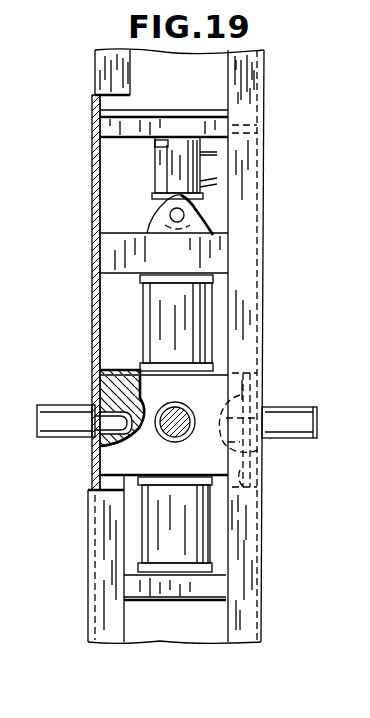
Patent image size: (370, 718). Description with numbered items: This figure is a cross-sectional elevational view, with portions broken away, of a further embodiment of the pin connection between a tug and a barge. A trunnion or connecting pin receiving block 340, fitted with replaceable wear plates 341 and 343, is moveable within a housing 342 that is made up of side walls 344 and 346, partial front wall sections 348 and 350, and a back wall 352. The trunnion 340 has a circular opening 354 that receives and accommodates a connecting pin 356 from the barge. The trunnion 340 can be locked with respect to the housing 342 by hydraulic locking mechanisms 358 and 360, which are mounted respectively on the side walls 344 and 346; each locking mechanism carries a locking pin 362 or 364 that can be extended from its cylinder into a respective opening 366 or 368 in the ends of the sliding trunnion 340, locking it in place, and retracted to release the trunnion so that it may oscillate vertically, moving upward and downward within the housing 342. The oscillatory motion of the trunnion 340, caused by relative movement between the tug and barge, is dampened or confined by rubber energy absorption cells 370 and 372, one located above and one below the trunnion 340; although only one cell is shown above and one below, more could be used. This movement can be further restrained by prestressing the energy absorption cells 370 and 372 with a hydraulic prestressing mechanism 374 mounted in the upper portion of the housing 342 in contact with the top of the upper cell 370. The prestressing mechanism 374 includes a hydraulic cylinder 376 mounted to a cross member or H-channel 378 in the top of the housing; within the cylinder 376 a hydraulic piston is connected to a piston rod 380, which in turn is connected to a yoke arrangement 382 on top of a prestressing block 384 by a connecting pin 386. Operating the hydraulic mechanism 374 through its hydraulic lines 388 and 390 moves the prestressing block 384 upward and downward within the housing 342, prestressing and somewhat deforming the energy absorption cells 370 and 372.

The trunnion or connecting pin receiving block 340 is at (90, 484).
The replaceable wear plate 341 is at (95, 375).
The housing 342 is at (264, 298).
The replaceable wear plate 343 is at (262, 487).
The side wall 344 is at (93, 172).
The side wall 346 is at (264, 196).
The partial front wall section 348 is at (110, 570).
The partial front wall section 350 is at (240, 560).
The back wall 352 is at (200, 68).
The circular opening 354 is at (176, 410).
The connecting pin 356 is at (172, 432).
The hydraulic locking mechanism 358 is at (52, 408).
The hydraulic locking mechanism 360 is at (298, 412).
The locking pin 362 is at (110, 425).
The locking pin 364 is at (252, 380).
The opening 366 is at (123, 373).
The opening 368 is at (262, 460).
The rubber energy absorption cell 370 is at (152, 309).
The rubber energy absorption cell 372 is at (200, 520).
The hydraulic prestressing mechanism 374 is at (147, 192).
The hydraulic cylinder 376 is at (160, 160).
The cross member or H-channel 378 is at (155, 118).
The piston rod 380 is at (157, 200).
The yoke arrangement 382 is at (206, 220).
The prestressing block 384 is at (127, 264).
The connecting pin 386 is at (172, 230).
The hydraulic line 388 is at (213, 174).
The hydraulic line 390 is at (216, 137).